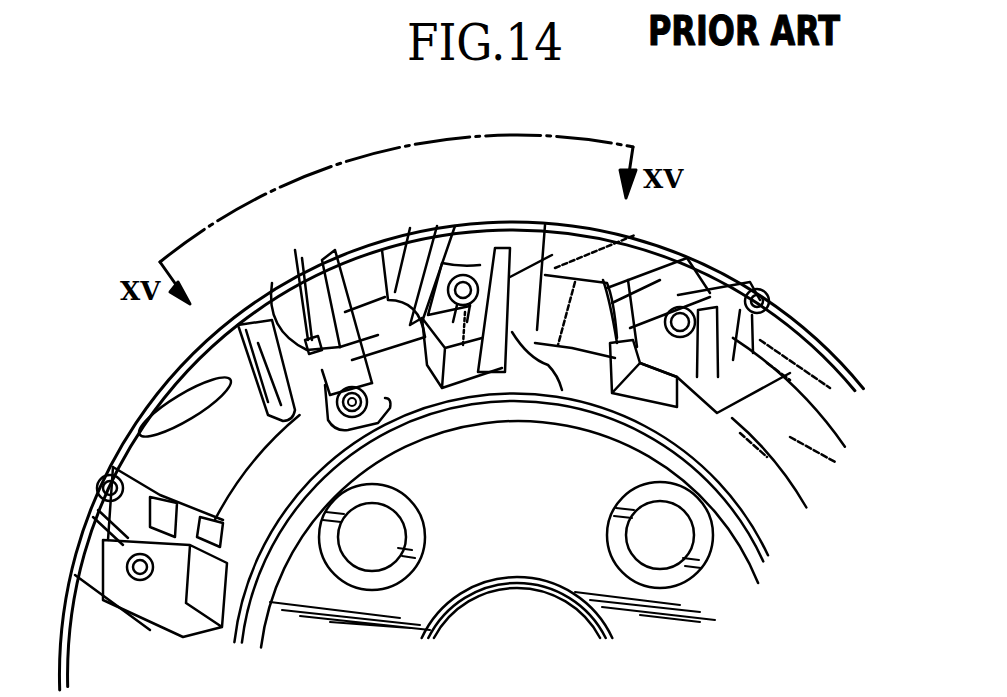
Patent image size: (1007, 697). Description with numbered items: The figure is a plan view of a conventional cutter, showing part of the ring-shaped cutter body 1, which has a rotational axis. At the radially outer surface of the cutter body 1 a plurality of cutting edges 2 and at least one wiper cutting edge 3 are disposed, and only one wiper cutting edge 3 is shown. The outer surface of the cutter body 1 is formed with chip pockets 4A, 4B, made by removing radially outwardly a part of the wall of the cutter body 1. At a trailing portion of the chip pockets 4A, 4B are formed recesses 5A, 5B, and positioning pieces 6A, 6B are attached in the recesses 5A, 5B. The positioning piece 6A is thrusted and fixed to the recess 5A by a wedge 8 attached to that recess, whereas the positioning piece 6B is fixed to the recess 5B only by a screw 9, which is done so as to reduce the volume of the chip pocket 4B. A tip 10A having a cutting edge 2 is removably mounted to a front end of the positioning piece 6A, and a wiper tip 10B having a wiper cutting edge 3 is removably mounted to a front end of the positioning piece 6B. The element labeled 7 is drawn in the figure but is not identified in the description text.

The cutter body 1 is at (588, 240).
The cutting edge 2 is at (490, 258).
The wiper cutting edge 3 is at (268, 337).
The chip pocket 4A is at (445, 247).
The chip pocket 4B is at (247, 322).
The recess 5A is at (513, 340).
The recess 5B is at (320, 330).
The positioning piece 6A is at (543, 340).
The positioning piece 6B is at (345, 345).
The adjusting member 7 is at (467, 342).
The wedge 8 is at (445, 362).
The screw 9 is at (360, 410).
The tip 10A is at (493, 258).
The wiper tip 10B is at (312, 345).